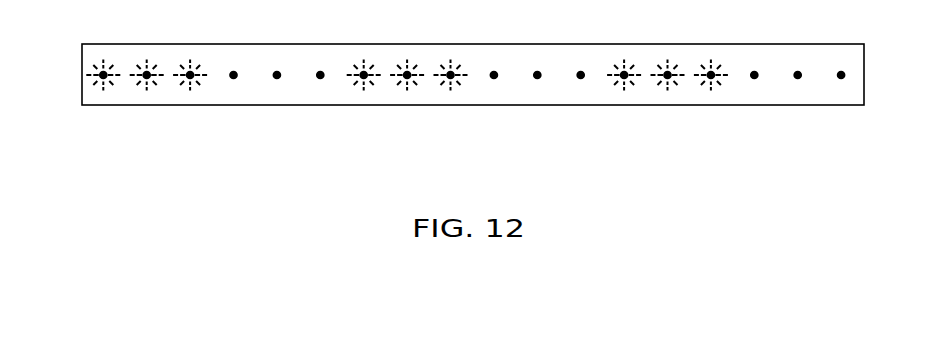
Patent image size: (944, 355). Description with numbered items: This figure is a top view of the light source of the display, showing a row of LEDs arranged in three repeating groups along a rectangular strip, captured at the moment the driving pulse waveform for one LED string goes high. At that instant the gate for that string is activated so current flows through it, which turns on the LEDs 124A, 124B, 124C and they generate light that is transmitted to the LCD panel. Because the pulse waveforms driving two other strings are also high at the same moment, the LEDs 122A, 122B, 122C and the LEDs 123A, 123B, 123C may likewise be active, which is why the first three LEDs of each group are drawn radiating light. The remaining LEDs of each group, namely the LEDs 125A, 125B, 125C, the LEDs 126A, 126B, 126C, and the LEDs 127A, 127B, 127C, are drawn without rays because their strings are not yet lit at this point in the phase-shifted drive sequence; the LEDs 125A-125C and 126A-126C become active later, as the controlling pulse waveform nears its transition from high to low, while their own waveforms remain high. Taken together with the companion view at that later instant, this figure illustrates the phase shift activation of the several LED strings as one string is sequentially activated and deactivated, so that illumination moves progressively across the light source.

The LED 122A is at (103, 77).
The LED 123A is at (145, 77).
The LED 124A is at (190, 77).
The LED 125A is at (232, 76).
The LED 126A is at (275, 76).
The third unilluminated light emitting element of first group 127A is at (318, 76).
The LED 122B is at (363, 77).
The LED 123B is at (406, 77).
The LED 124B is at (450, 77).
The LED 125B is at (492, 76).
The LED 126B is at (535, 76).
The third unilluminated light emitting element of second group 127B is at (579, 76).
The LED 122C is at (624, 77).
The LED 123C is at (666, 77).
The LED 124C is at (710, 77).
The LED 125C is at (752, 76).
The LED 126C is at (796, 76).
The third unilluminated light emitting element of third group 127C is at (839, 76).